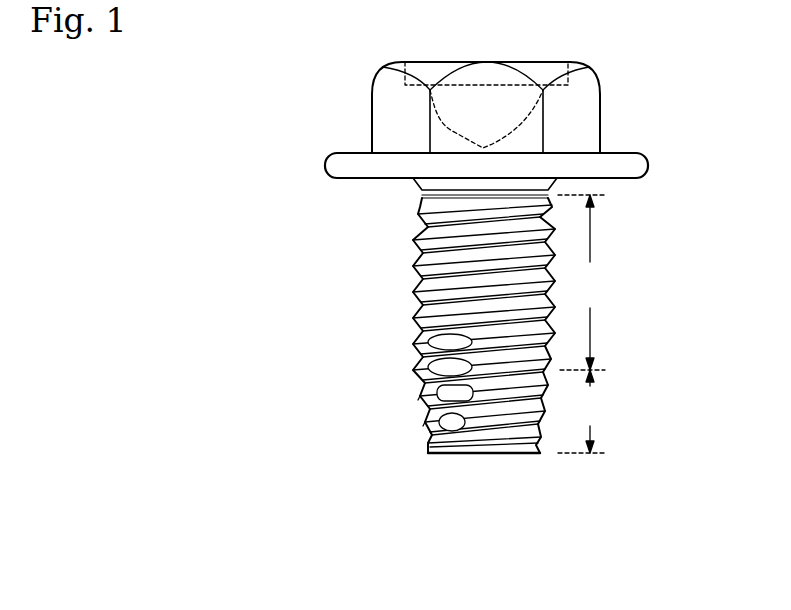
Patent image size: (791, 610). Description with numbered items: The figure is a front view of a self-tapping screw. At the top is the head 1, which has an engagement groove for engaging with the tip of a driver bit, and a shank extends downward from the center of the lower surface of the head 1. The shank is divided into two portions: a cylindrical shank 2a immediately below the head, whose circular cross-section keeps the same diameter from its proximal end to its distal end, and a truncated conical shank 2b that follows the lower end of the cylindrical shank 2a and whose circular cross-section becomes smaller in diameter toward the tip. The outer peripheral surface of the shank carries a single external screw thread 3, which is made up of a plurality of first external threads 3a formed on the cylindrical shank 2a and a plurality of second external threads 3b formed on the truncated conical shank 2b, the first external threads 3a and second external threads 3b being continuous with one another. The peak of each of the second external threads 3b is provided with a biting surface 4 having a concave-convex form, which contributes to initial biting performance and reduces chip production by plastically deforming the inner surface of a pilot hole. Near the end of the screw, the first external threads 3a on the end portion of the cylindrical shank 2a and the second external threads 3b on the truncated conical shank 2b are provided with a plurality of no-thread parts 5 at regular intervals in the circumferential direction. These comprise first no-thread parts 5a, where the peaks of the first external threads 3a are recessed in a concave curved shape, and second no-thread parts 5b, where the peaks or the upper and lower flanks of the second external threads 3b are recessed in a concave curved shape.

The head 1 is at (600, 88).
The cylindrical shank 2a is at (582, 282).
The truncated conical shank 2b is at (582, 411).
The external screw thread 3 is at (351, 278).
The first external threads 3a is at (403, 218).
The second external threads 3b is at (403, 383).
The biting surface 4 is at (416, 398).
The no-thread parts 5 is at (455, 538).
The first no-thread parts 5a is at (460, 343).
The second no-thread parts 5b is at (460, 395).